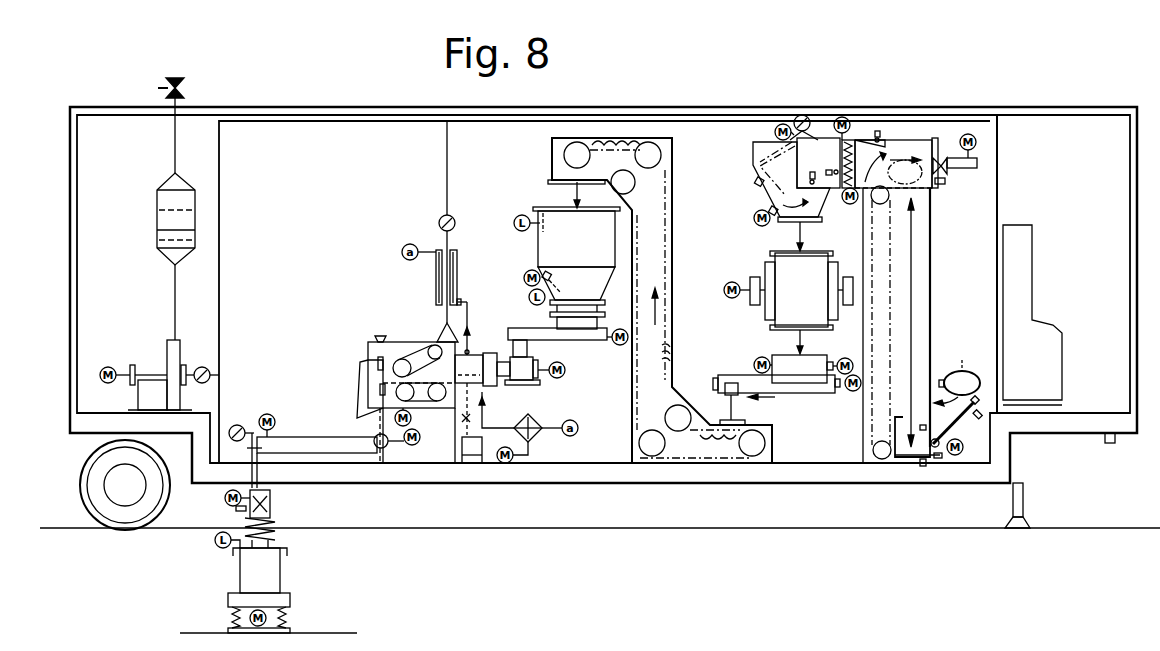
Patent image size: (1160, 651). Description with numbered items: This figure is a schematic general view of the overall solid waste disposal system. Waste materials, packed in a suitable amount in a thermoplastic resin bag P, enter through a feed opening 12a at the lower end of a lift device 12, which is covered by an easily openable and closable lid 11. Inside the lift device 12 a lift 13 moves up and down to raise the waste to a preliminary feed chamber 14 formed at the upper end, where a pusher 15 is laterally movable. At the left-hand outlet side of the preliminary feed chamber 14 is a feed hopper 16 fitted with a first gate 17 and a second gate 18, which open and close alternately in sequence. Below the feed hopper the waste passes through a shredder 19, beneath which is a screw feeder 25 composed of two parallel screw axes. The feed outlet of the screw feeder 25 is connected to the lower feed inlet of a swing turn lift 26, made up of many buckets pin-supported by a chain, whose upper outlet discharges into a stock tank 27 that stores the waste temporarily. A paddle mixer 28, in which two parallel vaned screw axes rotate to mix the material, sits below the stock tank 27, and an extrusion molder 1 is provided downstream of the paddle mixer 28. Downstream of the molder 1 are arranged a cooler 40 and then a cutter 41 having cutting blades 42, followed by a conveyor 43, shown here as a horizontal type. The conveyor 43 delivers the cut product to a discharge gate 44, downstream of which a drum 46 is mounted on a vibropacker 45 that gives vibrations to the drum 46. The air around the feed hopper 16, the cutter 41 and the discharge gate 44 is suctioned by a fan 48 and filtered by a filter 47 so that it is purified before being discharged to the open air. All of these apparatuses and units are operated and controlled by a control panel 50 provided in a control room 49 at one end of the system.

The extrusion molder 1 is at (522, 382).
The lid 11 is at (957, 428).
The lift device 12 is at (920, 276).
The feed opening 12a is at (928, 430).
The lift 13 is at (897, 452).
The preliminary feed chamber 14 is at (903, 147).
The pusher 15 is at (940, 167).
The feed hopper 16 is at (757, 147).
The first gate 17 is at (857, 140).
The second gate 18 is at (818, 163).
The shredder 19 is at (788, 273).
The screw feeder 25 is at (785, 387).
The swing turn lift 26 is at (668, 355).
The stock tank 27 is at (550, 242).
The paddle mixer 28 is at (570, 342).
The cooler 40 is at (476, 362).
The cutter 41 is at (395, 345).
The cutting blades 42 is at (381, 388).
The conveyor 43 is at (312, 438).
The discharge gate 44 is at (268, 510).
The vibropacker 45 is at (275, 600).
The drum 46 is at (265, 572).
The filter 47 is at (163, 223).
The fan 48 is at (173, 360).
The control room 49 is at (1076, 184).
The control panel 50 is at (1017, 268).
The thermoplastic resin bag P is at (957, 371).